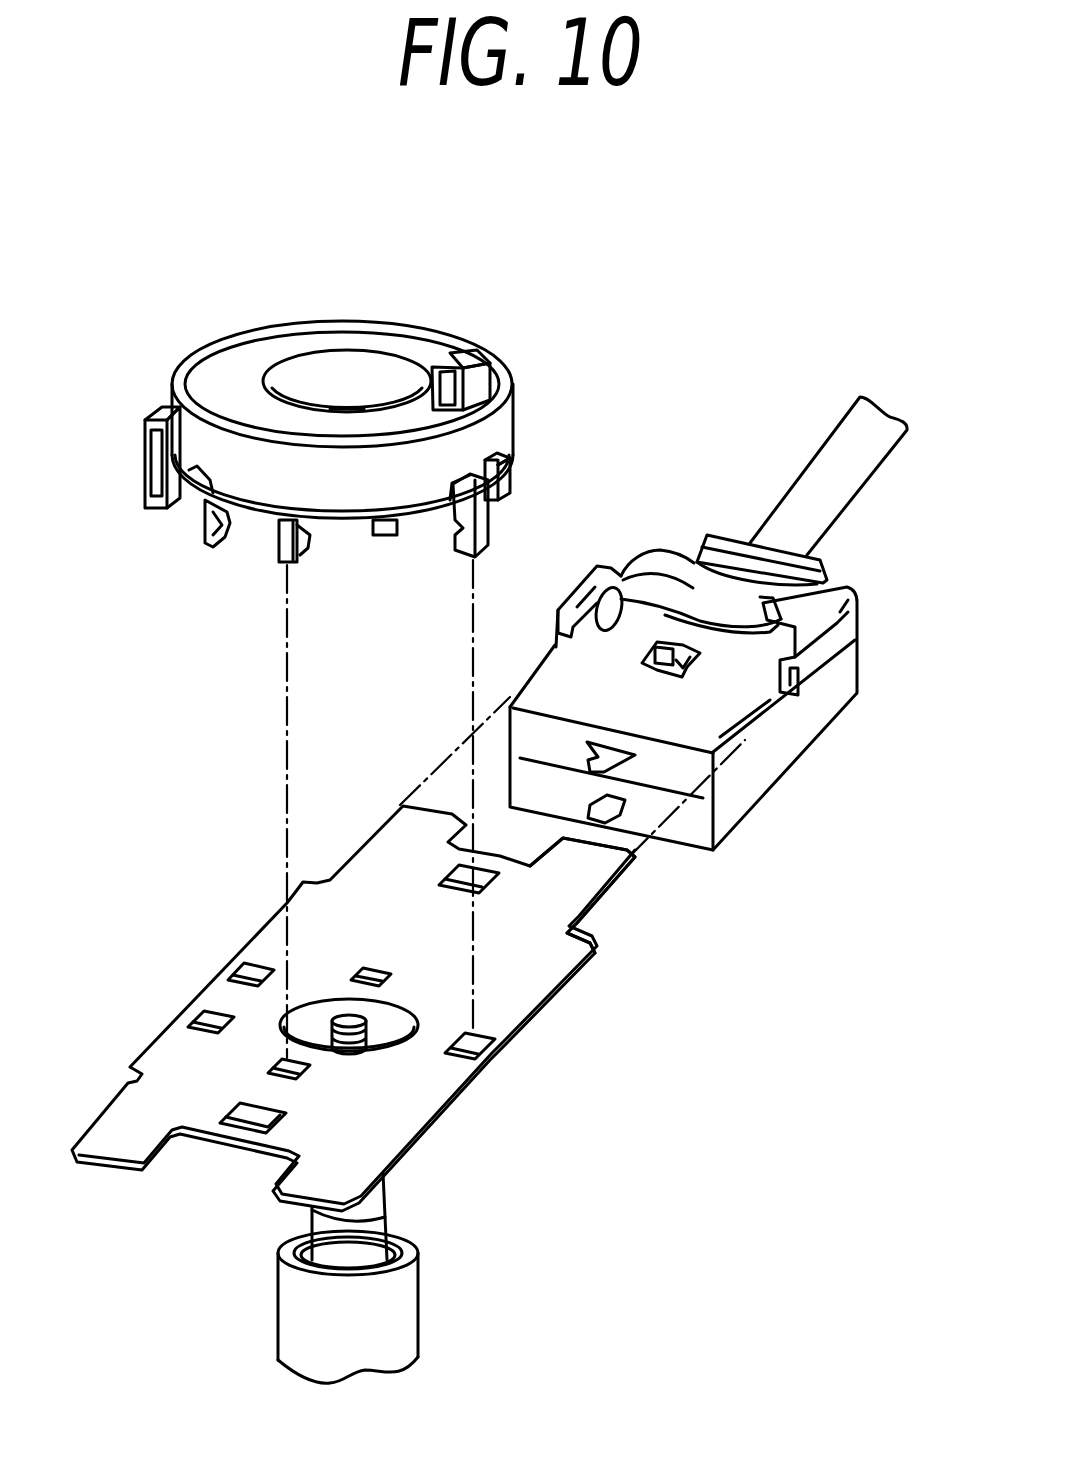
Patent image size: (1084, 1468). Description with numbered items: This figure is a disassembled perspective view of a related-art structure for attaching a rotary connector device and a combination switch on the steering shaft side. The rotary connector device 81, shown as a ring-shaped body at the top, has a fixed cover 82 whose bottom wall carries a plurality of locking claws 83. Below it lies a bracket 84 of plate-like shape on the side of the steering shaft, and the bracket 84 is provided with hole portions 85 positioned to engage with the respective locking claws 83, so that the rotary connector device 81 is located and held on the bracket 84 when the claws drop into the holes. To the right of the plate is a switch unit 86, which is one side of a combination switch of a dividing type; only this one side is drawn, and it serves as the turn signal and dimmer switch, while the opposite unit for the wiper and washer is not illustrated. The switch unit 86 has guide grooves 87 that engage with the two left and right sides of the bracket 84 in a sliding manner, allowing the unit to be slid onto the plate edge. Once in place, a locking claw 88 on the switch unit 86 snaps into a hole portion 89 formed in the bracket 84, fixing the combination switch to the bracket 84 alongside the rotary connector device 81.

The rotary connector device 81 is at (462, 326).
The fixed cover 82 is at (260, 477).
The locking claws 83 is at (303, 517).
The bracket 84 is at (369, 1008).
The hole portions 85 is at (307, 1071).
The switch unit 86 is at (812, 764).
The guide grooves 87 is at (626, 605).
The locking claw 88 is at (665, 642).
The hole portion 89 is at (583, 921).